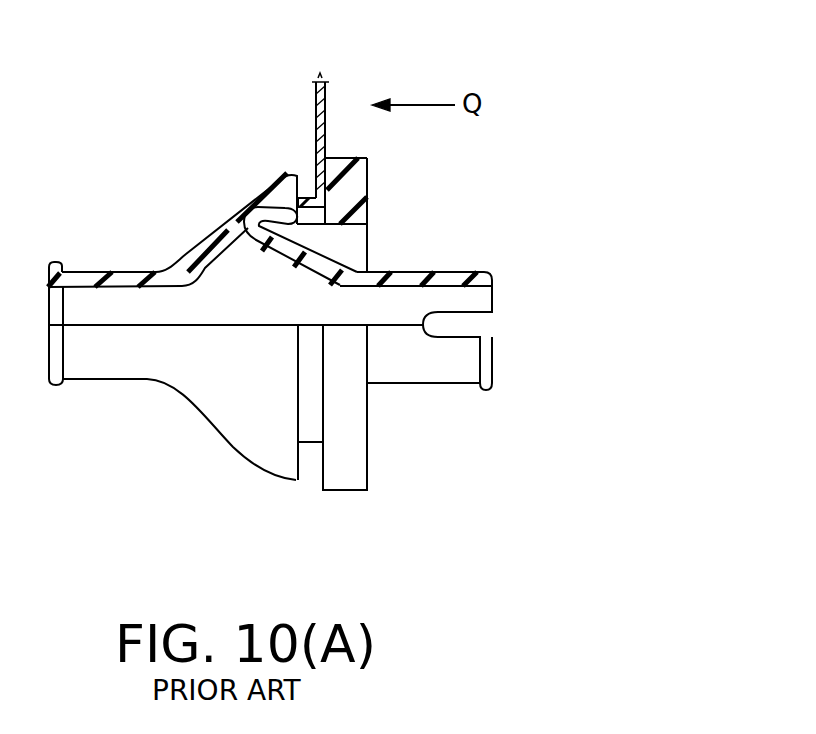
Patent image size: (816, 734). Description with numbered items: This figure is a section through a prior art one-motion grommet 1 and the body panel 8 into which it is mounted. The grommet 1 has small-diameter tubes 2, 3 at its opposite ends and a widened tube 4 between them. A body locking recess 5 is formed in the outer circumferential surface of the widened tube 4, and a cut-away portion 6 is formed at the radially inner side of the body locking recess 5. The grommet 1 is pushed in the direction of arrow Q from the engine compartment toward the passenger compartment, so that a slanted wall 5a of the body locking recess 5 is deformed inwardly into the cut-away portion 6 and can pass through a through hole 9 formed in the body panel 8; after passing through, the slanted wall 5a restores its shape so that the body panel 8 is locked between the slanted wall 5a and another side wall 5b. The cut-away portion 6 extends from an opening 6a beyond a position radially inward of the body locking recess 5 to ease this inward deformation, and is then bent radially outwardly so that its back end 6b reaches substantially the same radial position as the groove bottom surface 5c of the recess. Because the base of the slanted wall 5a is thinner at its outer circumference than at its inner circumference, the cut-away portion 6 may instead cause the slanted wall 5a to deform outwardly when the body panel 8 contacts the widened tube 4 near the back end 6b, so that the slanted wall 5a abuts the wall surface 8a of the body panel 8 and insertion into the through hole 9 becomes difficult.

The grommet 1 is at (158, 268).
The small-diameter tube 2 is at (100, 367).
The small-diameter tube 3 is at (458, 270).
The widened tube 4 is at (225, 447).
The body locking recess 5 is at (317, 490).
The slanted wall 5a is at (280, 470).
The side wall 5b is at (357, 460).
The groove bottom surface 5c is at (311, 447).
The cut-away portion 6 is at (352, 250).
The opening 6a is at (368, 230).
The back end 6b is at (236, 205).
The body panel 8 is at (336, 72).
The wall surface 8a is at (327, 108).
The through hole 9 is at (237, 223).